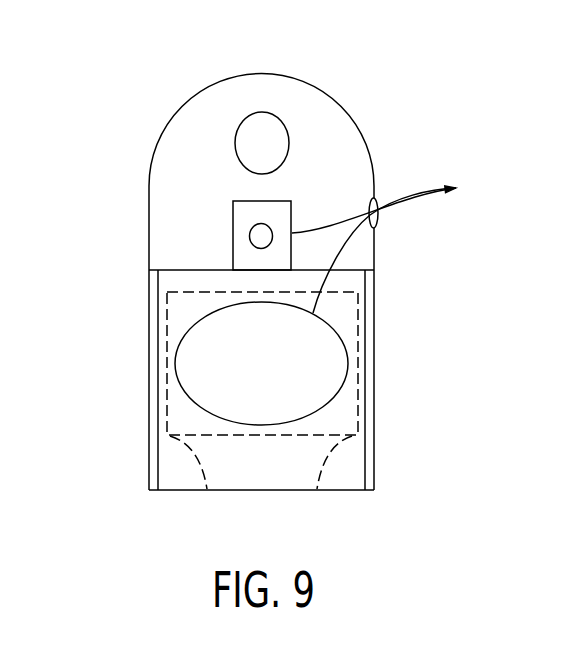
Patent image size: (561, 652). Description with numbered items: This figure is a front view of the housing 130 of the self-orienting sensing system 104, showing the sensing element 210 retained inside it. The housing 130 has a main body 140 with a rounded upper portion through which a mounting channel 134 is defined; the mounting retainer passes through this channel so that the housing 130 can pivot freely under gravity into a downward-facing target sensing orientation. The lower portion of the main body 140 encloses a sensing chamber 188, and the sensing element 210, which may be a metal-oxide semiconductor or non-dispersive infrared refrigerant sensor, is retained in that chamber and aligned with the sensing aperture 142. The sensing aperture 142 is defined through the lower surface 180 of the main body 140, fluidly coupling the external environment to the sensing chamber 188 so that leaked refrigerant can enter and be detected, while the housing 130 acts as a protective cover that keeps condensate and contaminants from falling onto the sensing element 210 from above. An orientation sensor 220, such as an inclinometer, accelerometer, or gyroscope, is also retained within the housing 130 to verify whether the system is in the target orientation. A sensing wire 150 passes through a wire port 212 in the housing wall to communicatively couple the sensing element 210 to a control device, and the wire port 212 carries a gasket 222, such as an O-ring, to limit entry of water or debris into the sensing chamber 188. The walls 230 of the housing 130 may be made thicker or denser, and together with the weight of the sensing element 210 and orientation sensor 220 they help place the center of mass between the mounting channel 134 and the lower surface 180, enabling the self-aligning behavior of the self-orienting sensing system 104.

The self-orienting sensing system 104 is at (322, 57).
The housing 130 is at (173, 118).
The mounting channel 134 is at (239, 118).
The main body 140 is at (150, 222).
The orientation sensor 220 is at (262, 200).
The wire port 212 is at (380, 197).
The gasket 222 is at (380, 228).
The sensing wire 150 is at (433, 188).
The sensing element 210 is at (343, 340).
The sensing chamber 188 is at (338, 413).
The walls 230 is at (149, 384).
The lower surface 180 is at (180, 491).
The sensing aperture 142 is at (280, 491).